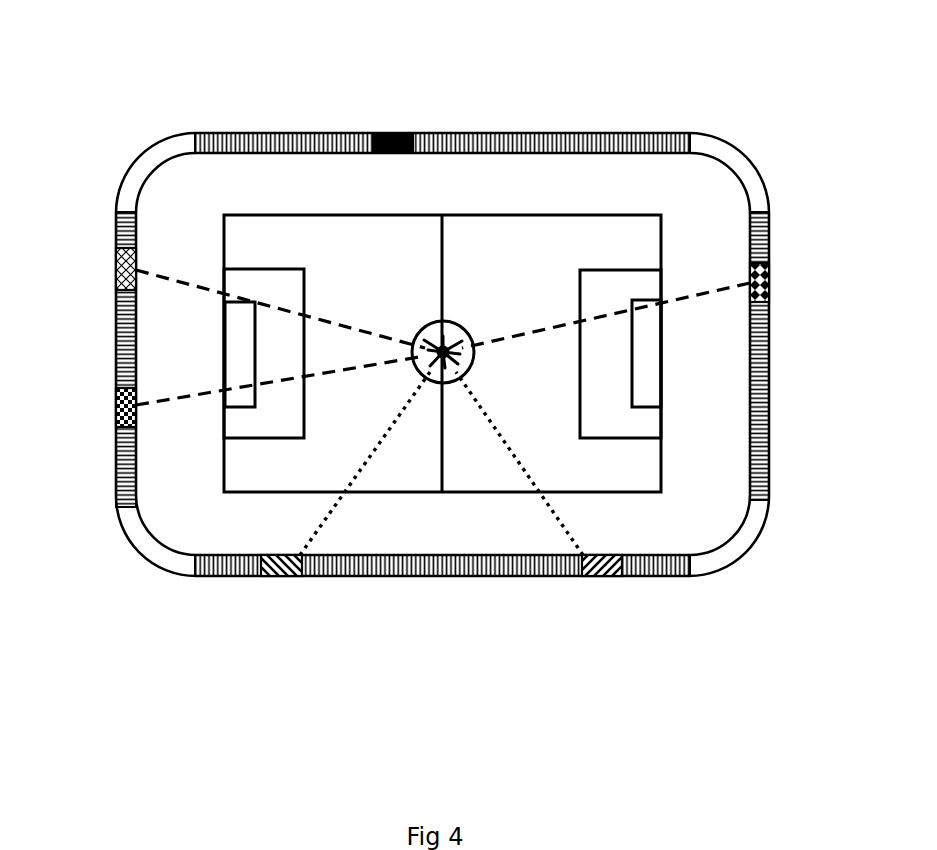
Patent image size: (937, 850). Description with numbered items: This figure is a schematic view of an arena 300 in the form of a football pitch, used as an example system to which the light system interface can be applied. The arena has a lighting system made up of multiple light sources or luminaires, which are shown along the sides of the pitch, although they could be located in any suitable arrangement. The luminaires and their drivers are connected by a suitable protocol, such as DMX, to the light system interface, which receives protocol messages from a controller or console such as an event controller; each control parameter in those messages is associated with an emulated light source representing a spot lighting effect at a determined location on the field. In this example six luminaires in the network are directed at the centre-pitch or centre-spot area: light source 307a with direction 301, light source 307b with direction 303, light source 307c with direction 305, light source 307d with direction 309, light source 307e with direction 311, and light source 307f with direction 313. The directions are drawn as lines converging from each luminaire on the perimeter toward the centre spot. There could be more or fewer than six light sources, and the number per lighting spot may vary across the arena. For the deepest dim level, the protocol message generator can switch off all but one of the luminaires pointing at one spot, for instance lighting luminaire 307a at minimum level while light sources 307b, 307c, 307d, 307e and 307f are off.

The arena 300 is at (134, 113).
The direction 301 is at (436, 333).
The direction 303 is at (370, 463).
The direction 305 is at (519, 463).
The light source 307a is at (423, 112).
The light source 307b is at (281, 598).
The light source 307c is at (591, 598).
The light source 307d is at (220, 394).
The light source 307e is at (220, 297).
The light source 307f is at (661, 303).
The direction 309 is at (227, 364).
The direction 311 is at (400, 353).
The direction 313 is at (660, 354).